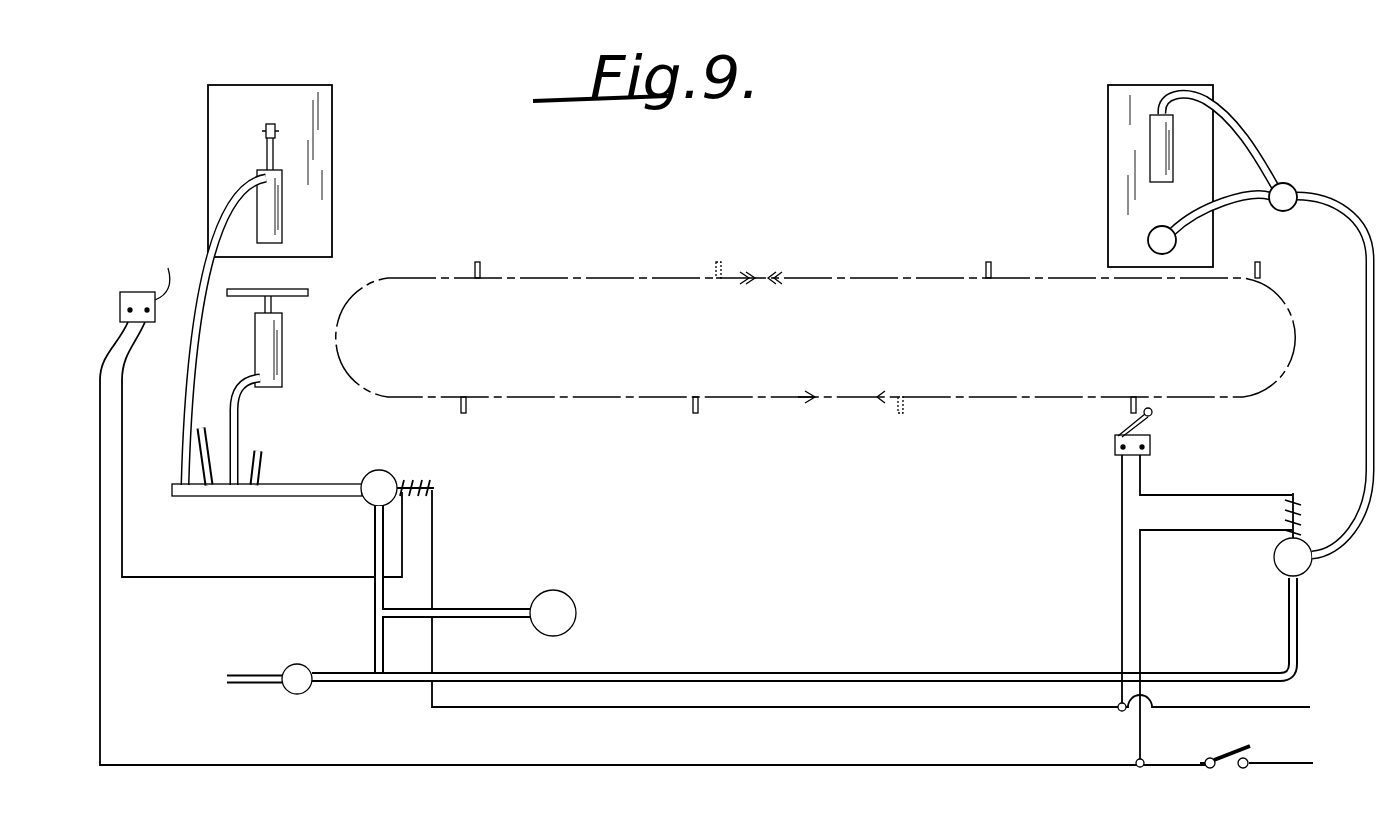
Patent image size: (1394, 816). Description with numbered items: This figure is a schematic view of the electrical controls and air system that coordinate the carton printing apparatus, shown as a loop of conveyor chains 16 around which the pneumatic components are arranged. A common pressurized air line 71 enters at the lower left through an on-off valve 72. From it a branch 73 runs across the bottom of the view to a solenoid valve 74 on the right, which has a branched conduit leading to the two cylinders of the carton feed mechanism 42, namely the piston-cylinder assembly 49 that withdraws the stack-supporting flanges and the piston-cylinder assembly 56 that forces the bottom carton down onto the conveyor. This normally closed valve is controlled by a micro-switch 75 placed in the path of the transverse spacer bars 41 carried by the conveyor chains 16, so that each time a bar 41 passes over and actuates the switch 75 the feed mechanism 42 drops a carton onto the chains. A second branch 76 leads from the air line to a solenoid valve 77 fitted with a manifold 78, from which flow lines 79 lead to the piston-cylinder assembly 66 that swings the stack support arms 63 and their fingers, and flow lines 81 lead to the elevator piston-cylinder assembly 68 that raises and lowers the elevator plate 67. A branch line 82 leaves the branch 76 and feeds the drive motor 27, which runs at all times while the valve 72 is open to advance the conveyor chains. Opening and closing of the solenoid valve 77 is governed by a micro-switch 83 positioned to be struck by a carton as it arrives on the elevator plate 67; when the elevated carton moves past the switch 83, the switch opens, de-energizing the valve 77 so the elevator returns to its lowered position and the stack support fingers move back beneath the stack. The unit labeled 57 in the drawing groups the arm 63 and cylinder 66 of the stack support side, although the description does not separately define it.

The conveyor chains 16 is at (829, 278).
The transverse spacer bar 41 is at (716, 265).
The carton feed mechanism 42 is at (1156, 80).
The piston-cylinder assembly 49 is at (1150, 240).
The piston-cylinder assembly 56 is at (1150, 147).
The first control unit 57 is at (313, 78).
The arm 63 is at (264, 129).
The piston-cylinder assembly 66 is at (283, 210).
The elevator plate 67 is at (300, 292).
The elevator piston-cylinder assembly 68 is at (283, 325).
The common pressurized air line 71 is at (250, 690).
The on-off valve 72 is at (290, 665).
The branch 73 is at (810, 676).
The solenoid valve 74 is at (1276, 564).
The micro-switch 75 is at (1152, 446).
The branch 76 is at (375, 640).
The solenoid valve 77 is at (378, 472).
The manifold 78 is at (290, 500).
The flow lines 79 is at (200, 452).
The flow lines 81 is at (262, 436).
The branch line 82 is at (457, 610).
The micro-switch 83 is at (138, 262).
The drive motor 27 is at (575, 610).